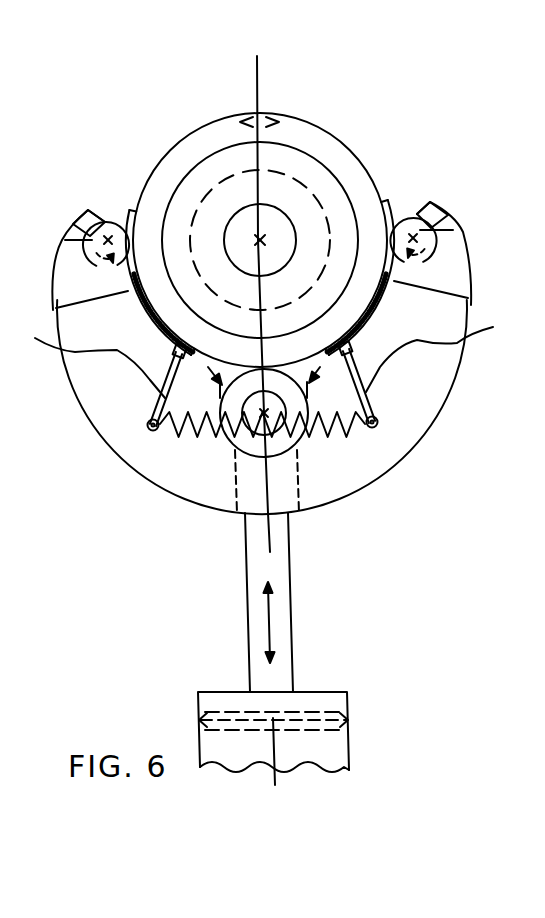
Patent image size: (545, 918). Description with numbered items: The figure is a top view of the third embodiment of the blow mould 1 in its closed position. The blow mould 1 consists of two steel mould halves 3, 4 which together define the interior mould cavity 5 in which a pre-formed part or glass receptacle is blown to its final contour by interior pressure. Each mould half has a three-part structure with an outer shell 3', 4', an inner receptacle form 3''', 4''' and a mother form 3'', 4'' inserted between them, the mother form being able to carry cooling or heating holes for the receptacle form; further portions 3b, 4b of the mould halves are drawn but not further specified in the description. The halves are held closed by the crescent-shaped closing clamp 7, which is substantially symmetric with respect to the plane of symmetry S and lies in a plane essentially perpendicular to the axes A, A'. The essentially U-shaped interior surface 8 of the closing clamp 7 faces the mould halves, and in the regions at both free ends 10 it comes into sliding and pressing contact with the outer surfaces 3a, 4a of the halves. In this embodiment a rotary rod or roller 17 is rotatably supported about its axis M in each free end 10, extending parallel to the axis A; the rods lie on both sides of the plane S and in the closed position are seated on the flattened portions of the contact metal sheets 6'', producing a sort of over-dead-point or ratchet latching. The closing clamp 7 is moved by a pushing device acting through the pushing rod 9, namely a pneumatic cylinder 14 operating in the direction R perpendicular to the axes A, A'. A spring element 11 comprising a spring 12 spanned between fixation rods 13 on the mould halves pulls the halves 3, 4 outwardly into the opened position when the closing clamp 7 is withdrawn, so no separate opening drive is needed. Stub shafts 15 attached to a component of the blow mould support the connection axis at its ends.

The blow mould 1 is at (120, 650).
The mould half 3 is at (331, 240).
The outer shell 3' is at (307, 113).
The mother form 3'' is at (330, 126).
The inner receptacle form 3''' is at (363, 129).
The outer surface of mould half 3a is at (357, 148).
The ring end 3b is at (269, 119).
The mould half 4 is at (187, 240).
The outer shell 4' is at (205, 114).
The second ring portion 4'' is at (183, 129).
The inner receptacle form 4''' is at (166, 143).
The outer surface of mould half 4a is at (163, 153).
The ring end 4b is at (252, 119).
The interior mould cavity 5 is at (246, 204).
The contact metal sheets 6'' is at (259, 264).
The closing clamp 7 is at (440, 375).
The interior surface 8 is at (120, 308).
The pushing rod 9 is at (276, 602).
The free ends of the closing clamp 10 is at (70, 276).
The spring element 11 is at (377, 433).
The spring 12 is at (158, 428).
The fixation rods 13 is at (265, 374).
The pneumatic cylinder 14 is at (331, 692).
The stub shafts 15 is at (258, 231).
The rotary rod or roller 17 is at (80, 222).
The axis of the blow mould A is at (264, 413).
The axis A' is at (269, 240).
The plane of symmetry S is at (302, 747).
The direction of pneumatic cylinder operation R is at (263, 612).
The axes of the rotary rods M is at (262, 270).